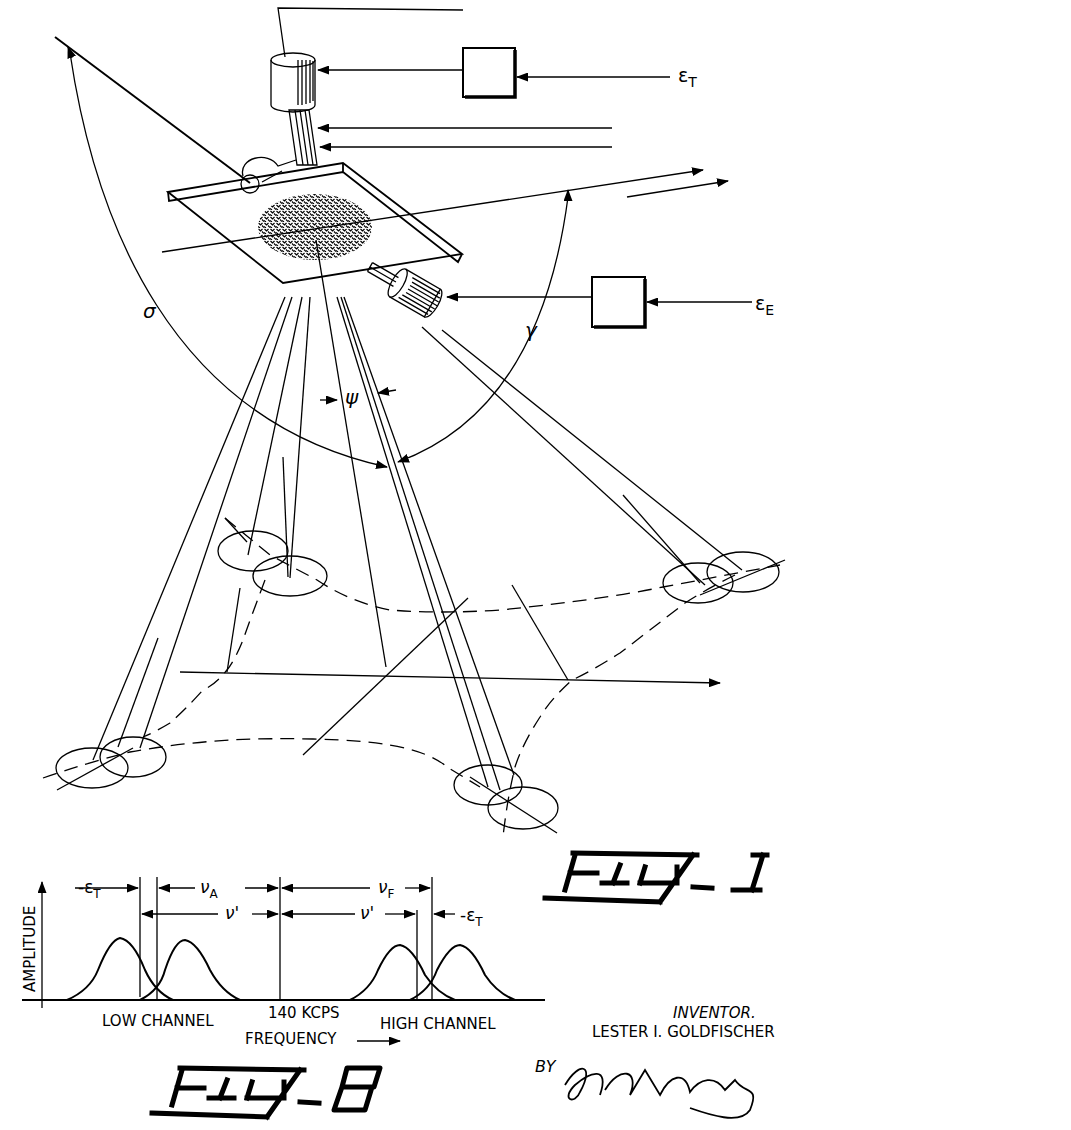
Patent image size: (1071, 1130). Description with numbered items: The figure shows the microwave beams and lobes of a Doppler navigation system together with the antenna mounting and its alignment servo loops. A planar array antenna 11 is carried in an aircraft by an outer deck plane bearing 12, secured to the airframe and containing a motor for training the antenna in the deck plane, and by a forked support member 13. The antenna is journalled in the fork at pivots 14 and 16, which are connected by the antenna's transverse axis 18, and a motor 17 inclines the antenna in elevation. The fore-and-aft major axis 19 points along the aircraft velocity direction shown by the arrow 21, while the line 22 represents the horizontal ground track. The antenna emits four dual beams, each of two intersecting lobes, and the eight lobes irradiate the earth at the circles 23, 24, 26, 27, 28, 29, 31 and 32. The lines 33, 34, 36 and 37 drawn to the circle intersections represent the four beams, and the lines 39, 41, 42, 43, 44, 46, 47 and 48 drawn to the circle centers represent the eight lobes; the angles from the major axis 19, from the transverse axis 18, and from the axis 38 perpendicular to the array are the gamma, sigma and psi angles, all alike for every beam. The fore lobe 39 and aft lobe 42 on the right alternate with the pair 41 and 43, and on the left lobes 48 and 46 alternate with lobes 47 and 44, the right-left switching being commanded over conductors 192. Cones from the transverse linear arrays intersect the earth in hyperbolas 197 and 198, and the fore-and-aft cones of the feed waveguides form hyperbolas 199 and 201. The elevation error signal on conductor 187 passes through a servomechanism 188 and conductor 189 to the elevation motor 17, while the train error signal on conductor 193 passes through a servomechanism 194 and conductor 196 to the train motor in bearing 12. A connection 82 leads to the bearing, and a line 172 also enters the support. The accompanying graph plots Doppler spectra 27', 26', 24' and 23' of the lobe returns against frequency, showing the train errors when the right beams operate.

In FIG. 1, the planar array antenna 11 is at (360, 188).
In FIG. 1, the bearing 12 is at (268, 84).
In FIG. 1, the forked support member 13 is at (298, 141).
In FIG. 1, the pivot 14 is at (238, 180).
In FIG. 1, the pivot 16 is at (372, 277).
In FIG. 1, the motor 17 is at (406, 308).
In FIG. 1, the transverse axis 18 is at (156, 113).
In FIG. 1, the major axis 19 is at (180, 251).
In FIG. 1, the arrow 21 is at (672, 189).
In FIG. 1, the line 22 is at (622, 680).
In FIG. 1, the circle 23 is at (530, 805).
In FIG. 1, the circle 24 is at (464, 785).
In FIG. 1, the circle 26 is at (147, 764).
In FIG. 1, the circle 27 is at (94, 781).
In FIG. 1, the circle 28 is at (238, 574).
In FIG. 1, the circle 29 is at (305, 565).
In FIG. 1, the circle 31 is at (668, 578).
In FIG. 1, the circle 32 is at (742, 552).
In FIG. 1, the line 33 is at (475, 738).
In FIG. 1, the line 34 is at (120, 706).
In FIG. 1, the line 36 is at (285, 503).
In FIG. 1, the line 37 is at (660, 512).
In FIG. 1, the axis 38 is at (360, 527).
In FIG. 1, the fore lobe 39 is at (491, 704).
In FIG. 1, the lobe 41 is at (459, 711).
In FIG. 1, the aft lobe 42 is at (178, 648).
In FIG. 1, the lobe 43 is at (142, 625).
In FIG. 1, the lobe 44 is at (264, 480).
In FIG. 1, the lobe 46 is at (296, 488).
In FIG. 1, the lobe 47 is at (585, 482).
In FIG. 1, the lobe 48 is at (622, 476).
In FIG. 1, the connection line 82 is at (404, 8).
In FIG. 1, the control signal line 172 is at (562, 129).
In FIG. 1, the conductor 187 is at (690, 306).
In FIG. 1, the servomechanism 188 is at (622, 276).
In FIG. 1, the conductor 189 is at (491, 298).
In FIG. 1, the conductor 192 is at (558, 145).
In FIG. 1, the conductor 193 is at (594, 76).
In FIG. 1, the servomechanism 194 is at (488, 48).
In FIG. 1, the conductor 196 is at (387, 72).
In FIG. 1, the hyperbola 197 is at (271, 739).
In FIG. 1, the hyperbola 198 is at (607, 602).
In FIG. 1, the hyperbola 199 is at (630, 638).
In FIG. 1, the hyperbola 201 is at (248, 645).
In FIG. 8, the doppler spectrum of beam 23 23' is at (470, 972).
In FIG. 8, the doppler spectrum of beam 24 24' is at (392, 972).
In FIG. 8, the doppler spectrum of beam 26 26' is at (196, 970).
In FIG. 8, the doppler spectrum of beam 27 27' is at (114, 969).